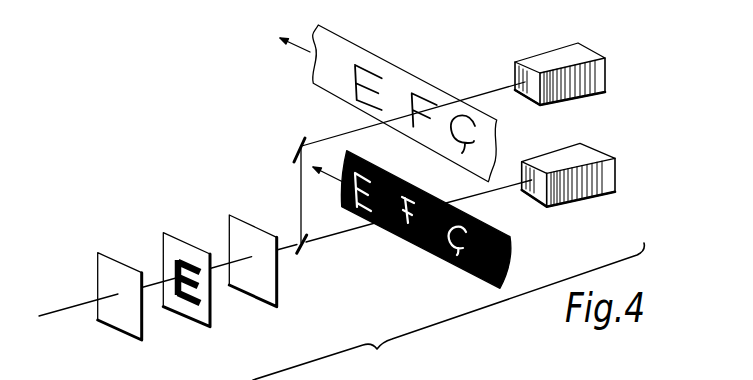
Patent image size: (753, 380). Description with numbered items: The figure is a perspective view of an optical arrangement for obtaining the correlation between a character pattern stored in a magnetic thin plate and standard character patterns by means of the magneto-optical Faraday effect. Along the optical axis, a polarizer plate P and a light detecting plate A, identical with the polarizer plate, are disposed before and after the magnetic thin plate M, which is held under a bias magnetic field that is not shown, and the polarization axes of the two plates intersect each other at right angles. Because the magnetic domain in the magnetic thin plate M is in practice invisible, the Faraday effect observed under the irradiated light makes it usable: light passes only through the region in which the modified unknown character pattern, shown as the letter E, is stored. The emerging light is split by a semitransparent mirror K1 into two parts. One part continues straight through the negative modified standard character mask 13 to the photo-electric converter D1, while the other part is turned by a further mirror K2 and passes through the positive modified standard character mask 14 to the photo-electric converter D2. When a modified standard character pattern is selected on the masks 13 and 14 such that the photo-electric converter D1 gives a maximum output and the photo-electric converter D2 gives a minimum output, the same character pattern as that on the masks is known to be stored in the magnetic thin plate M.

The polarizer plate P is at (113, 260).
The magnetic thin plate M is at (180, 240).
The light detecting plate A is at (246, 223).
The semitransparent mirror K1 is at (307, 235).
The mirror K2 is at (300, 152).
The negative modified standard character mask 13 is at (475, 274).
The positive modified standard character mask 14 is at (342, 37).
The photo-electric converter D1 is at (604, 154).
The photo-electric converter D2 is at (598, 53).